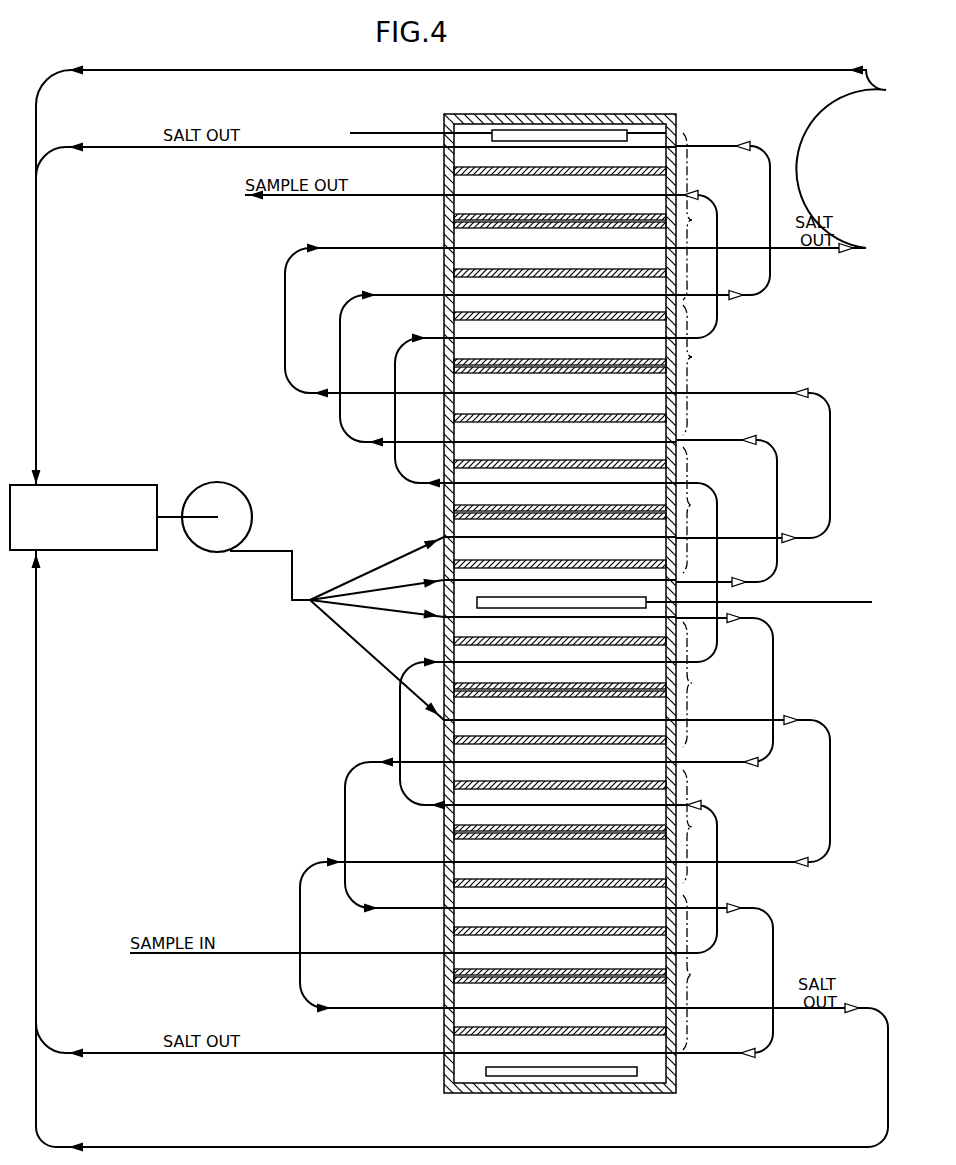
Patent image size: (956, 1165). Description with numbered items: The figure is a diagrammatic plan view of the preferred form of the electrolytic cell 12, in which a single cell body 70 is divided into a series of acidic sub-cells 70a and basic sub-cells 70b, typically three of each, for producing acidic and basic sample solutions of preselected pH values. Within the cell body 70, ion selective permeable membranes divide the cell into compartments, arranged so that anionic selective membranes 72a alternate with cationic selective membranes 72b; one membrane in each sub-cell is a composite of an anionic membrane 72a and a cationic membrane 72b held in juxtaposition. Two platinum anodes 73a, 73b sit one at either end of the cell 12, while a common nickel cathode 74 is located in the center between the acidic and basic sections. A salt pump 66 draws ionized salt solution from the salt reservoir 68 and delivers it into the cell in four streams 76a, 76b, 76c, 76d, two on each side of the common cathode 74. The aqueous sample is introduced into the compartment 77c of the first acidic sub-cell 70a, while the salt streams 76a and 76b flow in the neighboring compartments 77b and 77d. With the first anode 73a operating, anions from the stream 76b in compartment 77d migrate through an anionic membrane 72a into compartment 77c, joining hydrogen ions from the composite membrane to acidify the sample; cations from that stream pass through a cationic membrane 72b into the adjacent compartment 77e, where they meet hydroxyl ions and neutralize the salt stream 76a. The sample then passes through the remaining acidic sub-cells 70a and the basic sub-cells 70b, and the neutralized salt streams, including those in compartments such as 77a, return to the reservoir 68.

The electrolytic cell 12 is at (280, 1080).
The salt pump 66 is at (243, 483).
The salt reservoir 68 is at (136, 487).
The cell body 70 is at (452, 1089).
The acidic sub-cell 70a is at (704, 836).
The basic sub-cell 70b is at (703, 353).
The anionic selective membrane 72a is at (448, 980).
The cationic selective membrane 72b is at (448, 1031).
The first anode 73a is at (545, 1077).
The second anode 73b is at (557, 136).
The common cathode 74 is at (530, 598).
The salt stream 76a is at (372, 662).
The salt stream 76b is at (385, 602).
The salt stream 76c is at (350, 592).
The salt stream 76d is at (377, 568).
The compartment 77a is at (640, 1059).
The compartment 77b is at (640, 1015).
The compartment 77c is at (640, 959).
The compartment 77d is at (640, 913).
The compartment 77e is at (640, 867).